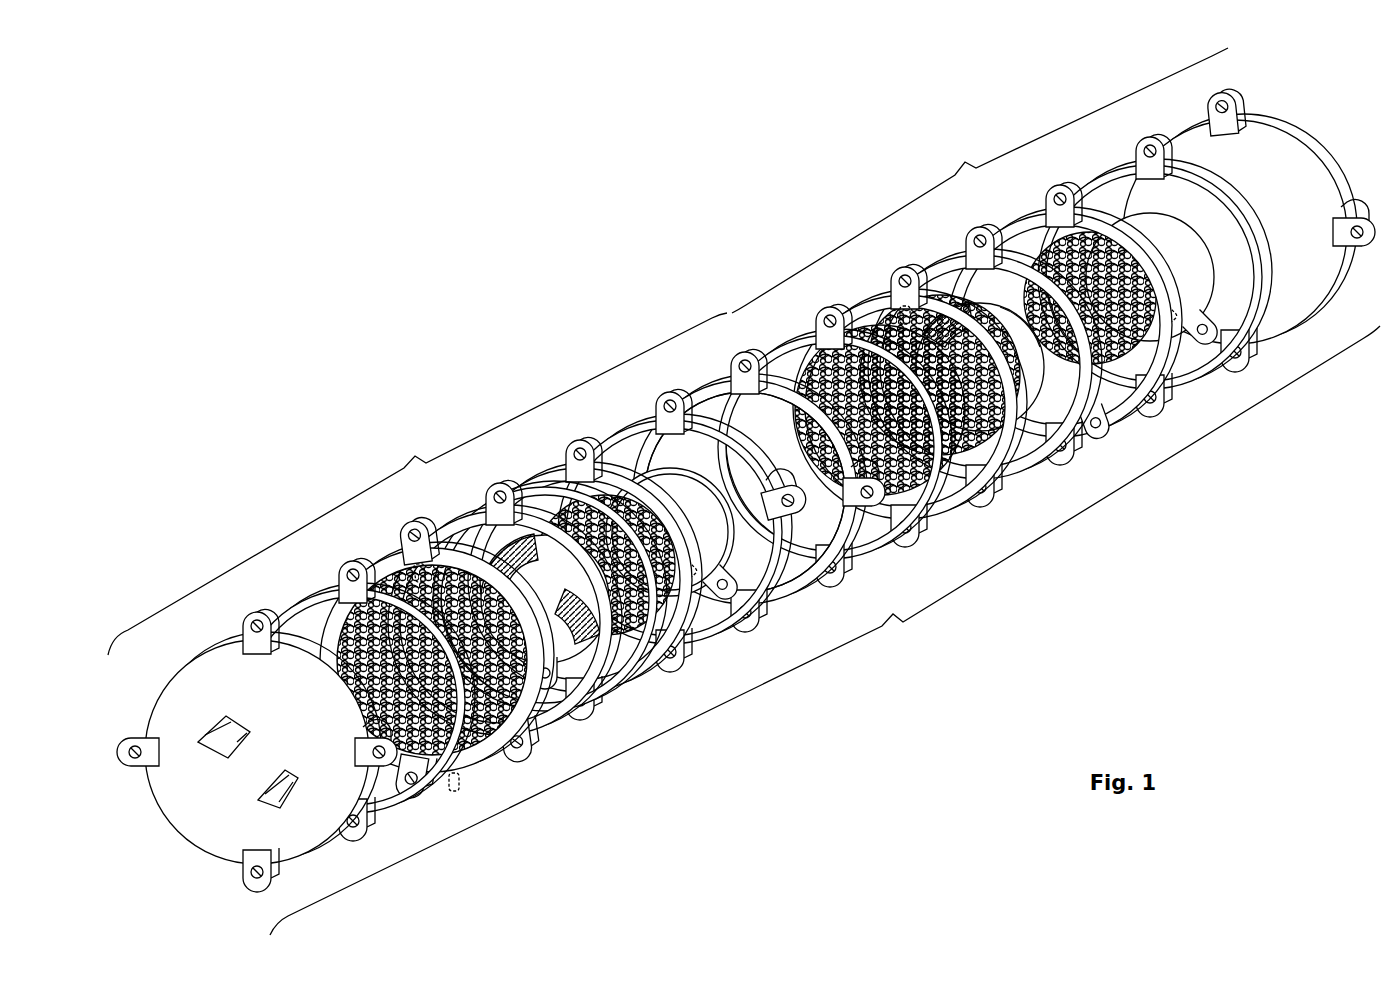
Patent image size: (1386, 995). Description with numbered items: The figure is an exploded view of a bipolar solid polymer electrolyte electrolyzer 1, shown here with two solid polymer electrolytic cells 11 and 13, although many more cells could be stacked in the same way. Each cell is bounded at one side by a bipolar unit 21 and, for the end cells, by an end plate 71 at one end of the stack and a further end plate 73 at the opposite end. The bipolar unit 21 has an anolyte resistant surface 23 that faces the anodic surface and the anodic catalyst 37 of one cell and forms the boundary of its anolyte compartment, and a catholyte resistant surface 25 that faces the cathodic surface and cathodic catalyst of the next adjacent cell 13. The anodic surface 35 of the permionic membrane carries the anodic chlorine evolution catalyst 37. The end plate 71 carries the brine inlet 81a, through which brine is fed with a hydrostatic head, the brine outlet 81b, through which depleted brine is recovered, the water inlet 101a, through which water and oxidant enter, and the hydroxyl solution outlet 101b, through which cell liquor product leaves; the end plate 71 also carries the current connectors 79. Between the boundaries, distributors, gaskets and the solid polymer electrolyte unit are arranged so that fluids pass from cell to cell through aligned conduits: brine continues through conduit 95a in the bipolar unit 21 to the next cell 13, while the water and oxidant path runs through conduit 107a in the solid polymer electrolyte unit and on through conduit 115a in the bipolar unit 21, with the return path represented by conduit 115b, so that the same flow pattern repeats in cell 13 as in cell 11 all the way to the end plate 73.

The electrolyzer 1 is at (825, 630).
The electrolytic cell 11 is at (417, 484).
The electrolytic cell 13 is at (980, 180).
The bipolar unit 21 is at (759, 496).
The anolyte resistant surface 23 is at (745, 488).
The catholyte resistant surface 25 is at (838, 408).
The anodic surface 35 is at (540, 512).
The anodic chlorine evolution catalyst 37 is at (1028, 250).
The end plate 71 is at (241, 753).
The rear end plate 73 is at (1249, 235).
The current connectors 79 is at (240, 762).
The brine inlet 81a is at (353, 742).
The brine outlet 81b is at (122, 766).
The conduit 95a is at (842, 482).
The water inlet 101a is at (229, 872).
The hydroxyl solution outlet 101b is at (226, 631).
The conduit 107a is at (1006, 493).
The conduit 115a is at (718, 371).
The lower lug 115b is at (776, 616).